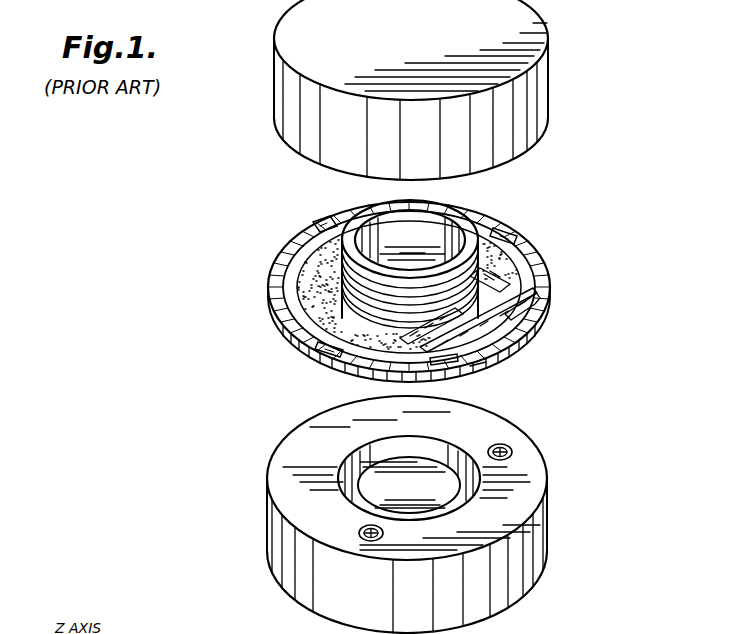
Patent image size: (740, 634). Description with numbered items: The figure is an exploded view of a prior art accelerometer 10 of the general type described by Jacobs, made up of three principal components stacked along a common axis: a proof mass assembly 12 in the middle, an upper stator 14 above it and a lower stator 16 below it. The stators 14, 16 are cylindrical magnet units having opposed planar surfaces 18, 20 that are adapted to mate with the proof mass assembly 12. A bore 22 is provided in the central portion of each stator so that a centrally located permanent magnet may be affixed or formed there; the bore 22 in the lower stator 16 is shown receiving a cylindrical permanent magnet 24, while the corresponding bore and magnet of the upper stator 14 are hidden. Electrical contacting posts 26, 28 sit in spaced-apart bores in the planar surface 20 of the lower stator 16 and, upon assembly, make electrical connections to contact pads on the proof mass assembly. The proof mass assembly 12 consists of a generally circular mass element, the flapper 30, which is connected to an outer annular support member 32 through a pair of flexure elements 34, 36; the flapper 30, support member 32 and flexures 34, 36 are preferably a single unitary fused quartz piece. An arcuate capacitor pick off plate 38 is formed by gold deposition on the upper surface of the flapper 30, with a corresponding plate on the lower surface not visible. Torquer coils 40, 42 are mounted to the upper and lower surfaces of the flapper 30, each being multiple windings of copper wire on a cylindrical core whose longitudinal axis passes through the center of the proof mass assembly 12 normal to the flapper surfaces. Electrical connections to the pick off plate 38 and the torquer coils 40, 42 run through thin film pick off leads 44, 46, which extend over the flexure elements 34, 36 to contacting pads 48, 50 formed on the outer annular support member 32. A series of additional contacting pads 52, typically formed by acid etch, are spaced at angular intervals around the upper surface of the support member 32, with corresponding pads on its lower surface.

The accelerometer 10 is at (246, 200).
The proof mass assembly 12 is at (557, 259).
The upper stator 14 is at (548, 52).
The lower stator 16 is at (540, 532).
The planar surface 18 is at (546, 142).
The planar surface 20 is at (533, 470).
The bore 22 is at (340, 455).
The cylindrical permanent magnet 24 is at (430, 477).
The electrical contacting post 26 is at (513, 448).
The electrical contacting post 28 is at (357, 532).
The flapper 30 is at (292, 288).
The outer annular support member 32 is at (282, 330).
The flexure element 34 is at (355, 378).
The flexure element 36 is at (517, 292).
The capacitor pick off plate 38 is at (312, 250).
The torquer coil 40 is at (460, 222).
The torquer coil 42 is at (455, 367).
The thin film pick off lead 44 is at (500, 363).
The thin film pick off lead 46 is at (537, 328).
The contacting pad 48 is at (480, 370).
The contacting pad 50 is at (547, 313).
The contacting pads 52 is at (322, 222).